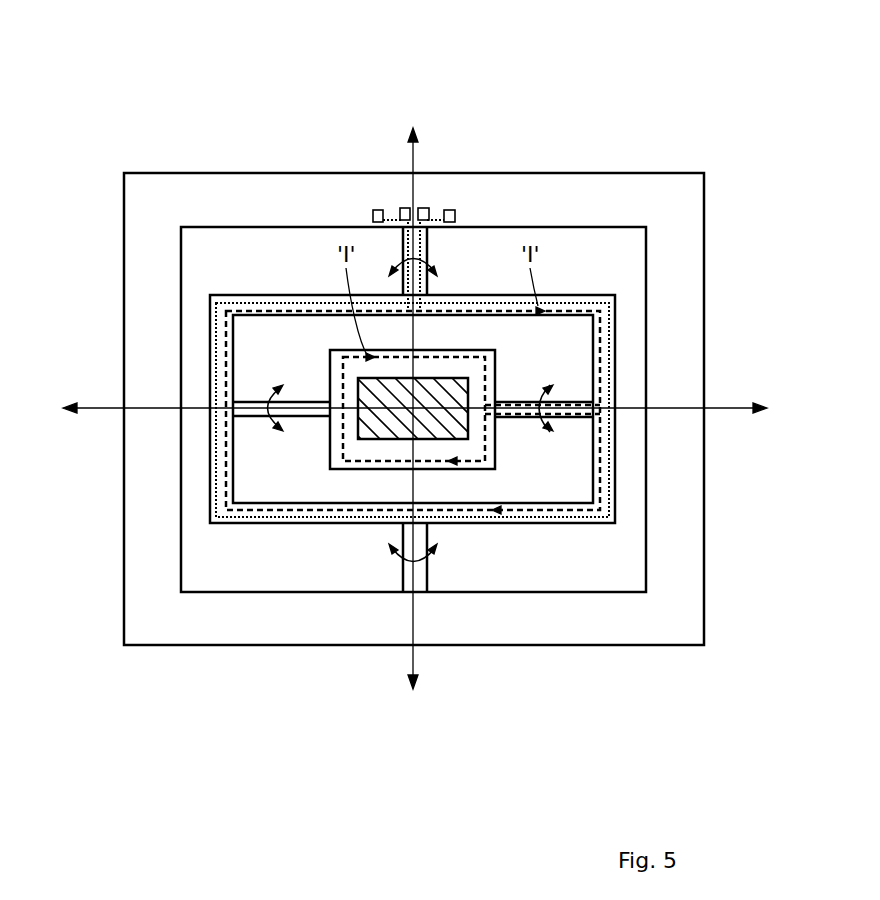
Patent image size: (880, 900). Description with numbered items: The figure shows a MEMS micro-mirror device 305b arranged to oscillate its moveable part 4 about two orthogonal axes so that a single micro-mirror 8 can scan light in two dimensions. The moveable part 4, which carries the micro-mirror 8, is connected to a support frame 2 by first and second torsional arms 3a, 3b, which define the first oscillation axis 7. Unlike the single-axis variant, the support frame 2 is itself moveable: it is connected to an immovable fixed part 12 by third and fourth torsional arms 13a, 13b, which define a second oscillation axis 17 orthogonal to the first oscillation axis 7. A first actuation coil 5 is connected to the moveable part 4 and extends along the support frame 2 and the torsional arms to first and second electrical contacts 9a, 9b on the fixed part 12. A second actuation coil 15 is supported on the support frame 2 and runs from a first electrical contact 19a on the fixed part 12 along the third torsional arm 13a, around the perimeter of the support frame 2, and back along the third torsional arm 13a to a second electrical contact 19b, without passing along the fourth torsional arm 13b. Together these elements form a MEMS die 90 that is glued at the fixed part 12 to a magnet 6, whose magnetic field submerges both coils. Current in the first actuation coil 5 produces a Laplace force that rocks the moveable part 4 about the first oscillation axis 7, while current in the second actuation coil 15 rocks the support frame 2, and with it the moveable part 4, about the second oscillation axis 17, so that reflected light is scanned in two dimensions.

The MEMS micro-mirror device 305b is at (656, 104).
The fixed part 12 is at (617, 620).
The magnet 6 is at (506, 572).
The MEMS die 90 is at (696, 600).
The support frame 2 is at (214, 525).
The second actuation coil 15 is at (609, 342).
The first actuation coil 5 is at (487, 366).
The micro-mirror 8 is at (373, 393).
The moveable part 4 is at (358, 447).
The second torsional arm 3b is at (300, 416).
The first torsional arm 3a is at (520, 418).
The third torsional arm 13a is at (418, 212).
The fourth torsional arm 13b is at (411, 590).
The first electrical contact 19a is at (374, 212).
The first electrical contact 9a is at (404, 207).
The second electrical contact 9b is at (428, 207).
The second electrical contact 19b is at (456, 214).
The first oscillation axis 7 is at (718, 410).
The second oscillation axis 17 is at (415, 655).